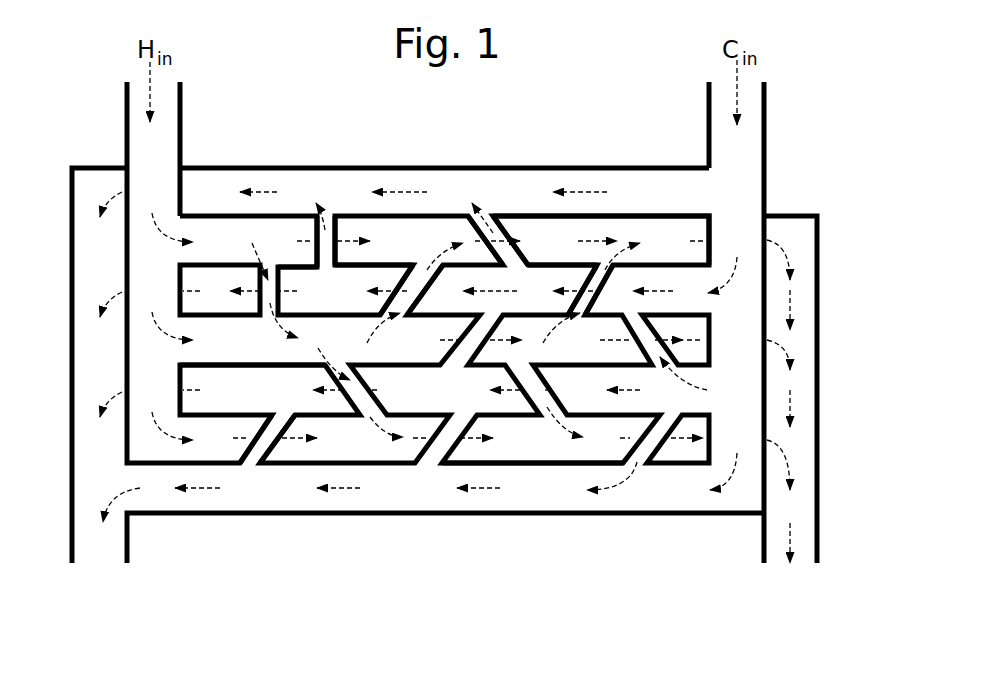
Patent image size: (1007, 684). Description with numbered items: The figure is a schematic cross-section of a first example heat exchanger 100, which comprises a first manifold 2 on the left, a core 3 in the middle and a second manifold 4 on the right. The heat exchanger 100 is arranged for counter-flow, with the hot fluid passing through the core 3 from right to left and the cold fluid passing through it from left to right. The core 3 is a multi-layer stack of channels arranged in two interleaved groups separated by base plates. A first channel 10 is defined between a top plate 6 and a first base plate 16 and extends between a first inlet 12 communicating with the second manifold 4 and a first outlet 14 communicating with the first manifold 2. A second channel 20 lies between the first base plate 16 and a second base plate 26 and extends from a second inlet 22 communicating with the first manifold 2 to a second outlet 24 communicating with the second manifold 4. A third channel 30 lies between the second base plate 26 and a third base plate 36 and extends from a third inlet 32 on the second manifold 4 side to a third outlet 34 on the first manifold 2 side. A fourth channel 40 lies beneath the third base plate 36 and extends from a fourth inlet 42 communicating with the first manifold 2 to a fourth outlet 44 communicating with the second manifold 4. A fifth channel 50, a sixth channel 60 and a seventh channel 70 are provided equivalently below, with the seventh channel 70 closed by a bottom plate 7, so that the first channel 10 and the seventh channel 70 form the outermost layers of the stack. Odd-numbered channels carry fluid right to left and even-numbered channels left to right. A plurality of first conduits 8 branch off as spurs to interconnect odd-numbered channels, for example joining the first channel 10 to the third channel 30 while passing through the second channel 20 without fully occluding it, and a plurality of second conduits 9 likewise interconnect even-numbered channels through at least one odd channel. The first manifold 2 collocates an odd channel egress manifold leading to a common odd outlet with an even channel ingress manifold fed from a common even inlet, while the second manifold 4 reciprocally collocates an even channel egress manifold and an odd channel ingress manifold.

The heat exchanger 100 is at (825, 104).
The first manifold 2 is at (67, 612).
The core 3 is at (178, 612).
The second manifold 4 is at (822, 612).
The top plate 6 is at (218, 166).
The bottom plate 7 is at (212, 517).
The first conduit 8 is at (318, 228).
The second conduit 9 is at (400, 280).
The first channel 10 is at (313, 178).
The first inlet 12 is at (707, 190).
The first outlet 14 is at (178, 178).
The first base plate 16 is at (550, 282).
The second channel 20 is at (443, 327).
The second inlet 22 is at (190, 246).
The second outlet 24 is at (709, 228).
The second base plate 26 is at (546, 262).
The third channel 30 is at (326, 280).
The third inlet 32 is at (707, 302).
The third outlet 34 is at (178, 276).
The third base plate 36 is at (552, 282).
The fourth channel 40 is at (450, 280).
The fourth inlet 42 is at (192, 352).
The fourth outlet 44 is at (710, 350).
The fifth channel 50 is at (220, 402).
The sixth channel 60 is at (525, 447).
The seventh channel 70 is at (365, 500).